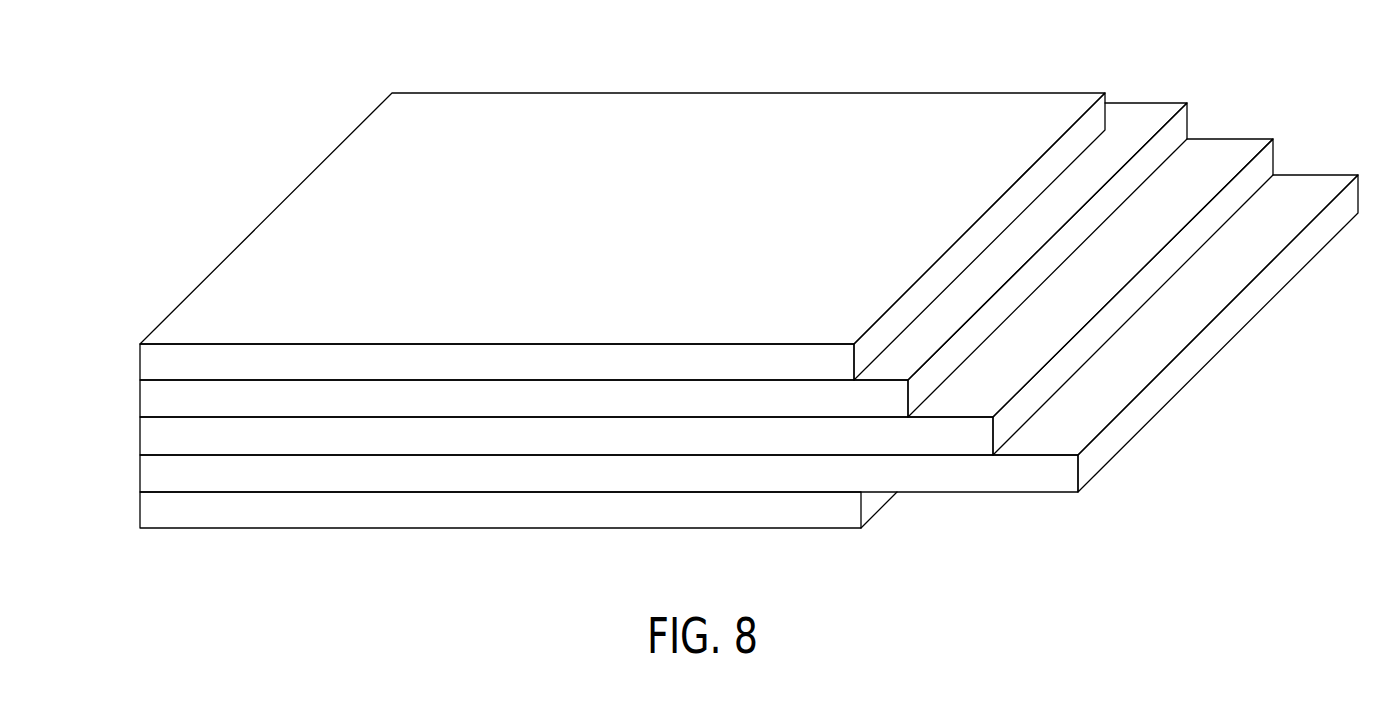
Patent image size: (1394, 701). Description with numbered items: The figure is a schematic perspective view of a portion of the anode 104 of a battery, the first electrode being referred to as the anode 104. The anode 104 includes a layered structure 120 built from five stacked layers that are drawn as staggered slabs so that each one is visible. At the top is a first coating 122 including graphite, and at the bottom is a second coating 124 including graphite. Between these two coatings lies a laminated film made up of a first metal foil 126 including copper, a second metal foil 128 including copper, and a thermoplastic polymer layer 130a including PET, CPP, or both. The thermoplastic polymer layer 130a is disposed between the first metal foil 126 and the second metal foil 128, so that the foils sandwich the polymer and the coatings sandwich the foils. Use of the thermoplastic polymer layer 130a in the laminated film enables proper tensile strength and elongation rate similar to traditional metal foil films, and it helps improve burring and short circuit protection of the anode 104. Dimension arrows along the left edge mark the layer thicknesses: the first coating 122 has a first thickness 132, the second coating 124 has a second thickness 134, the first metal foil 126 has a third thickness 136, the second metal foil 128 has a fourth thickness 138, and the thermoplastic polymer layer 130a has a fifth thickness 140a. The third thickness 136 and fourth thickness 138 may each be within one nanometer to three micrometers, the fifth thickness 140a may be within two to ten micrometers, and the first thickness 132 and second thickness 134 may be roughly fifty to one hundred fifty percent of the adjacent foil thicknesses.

The anode 104 is at (1082, 48).
The layered structure 120 is at (230, 193).
The first coating 122 is at (1093, 122).
The second coating 124 is at (872, 503).
The first metal foil 126 is at (1176, 132).
The second metal foil 128 is at (1262, 297).
The thermoplastic polymer layer 130a is at (1260, 168).
The first thickness 132 is at (133, 344).
The second thickness 134 is at (133, 528).
The third thickness 136 is at (133, 381).
The fourth thickness 138 is at (133, 455).
The fifth thickness 140a is at (133, 418).